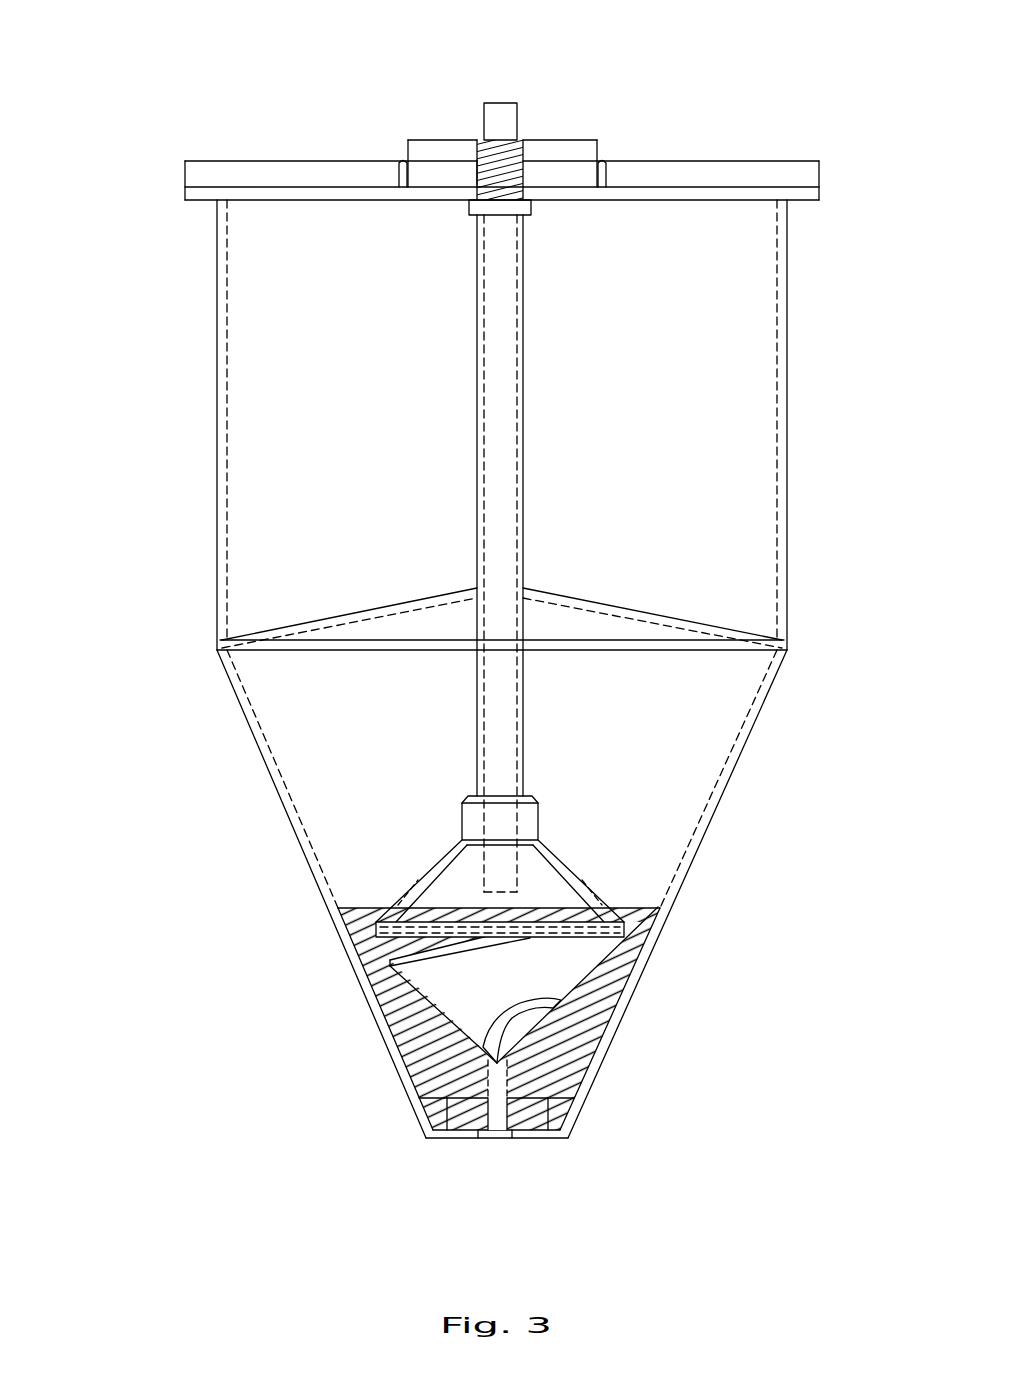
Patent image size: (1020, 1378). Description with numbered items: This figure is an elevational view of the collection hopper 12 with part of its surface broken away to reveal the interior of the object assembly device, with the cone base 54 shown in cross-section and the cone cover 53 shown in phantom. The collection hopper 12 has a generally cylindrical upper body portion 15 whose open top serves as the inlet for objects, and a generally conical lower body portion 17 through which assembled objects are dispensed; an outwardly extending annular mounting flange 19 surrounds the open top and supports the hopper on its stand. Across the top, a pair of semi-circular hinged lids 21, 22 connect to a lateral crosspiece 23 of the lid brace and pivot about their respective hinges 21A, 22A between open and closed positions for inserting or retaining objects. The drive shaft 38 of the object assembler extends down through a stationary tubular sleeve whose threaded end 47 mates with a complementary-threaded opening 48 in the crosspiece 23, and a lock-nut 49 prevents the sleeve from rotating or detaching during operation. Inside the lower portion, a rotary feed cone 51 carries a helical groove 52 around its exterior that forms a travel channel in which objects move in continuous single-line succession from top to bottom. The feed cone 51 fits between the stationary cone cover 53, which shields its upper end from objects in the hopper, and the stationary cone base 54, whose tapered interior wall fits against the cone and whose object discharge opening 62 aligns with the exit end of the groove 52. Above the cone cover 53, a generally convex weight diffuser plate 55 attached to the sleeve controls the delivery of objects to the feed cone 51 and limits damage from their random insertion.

The collection hopper 12 is at (475, 681).
The cylindrical upper body portion 15 is at (745, 383).
The conical lower body portion 17 is at (673, 773).
The mounting flange 19 is at (800, 201).
The hinged lid 21 is at (240, 183).
The hinge 21A is at (400, 162).
The hinged lid 22 is at (780, 161).
The hinge 22A is at (607, 161).
The lateral crosspiece 23 is at (437, 140).
The drive shaft 38 is at (512, 102).
The threaded end 47 is at (478, 175).
The threaded opening 48 is at (520, 150).
The lock-nut 49 is at (533, 208).
The rotary feed cone 51 is at (582, 955).
The helical groove 52 is at (528, 1020).
The cone cover 53 is at (580, 886).
The cone base 54 is at (418, 1043).
The weight diffuser plate 55 is at (418, 622).
The object discharge opening 62 is at (487, 1077).